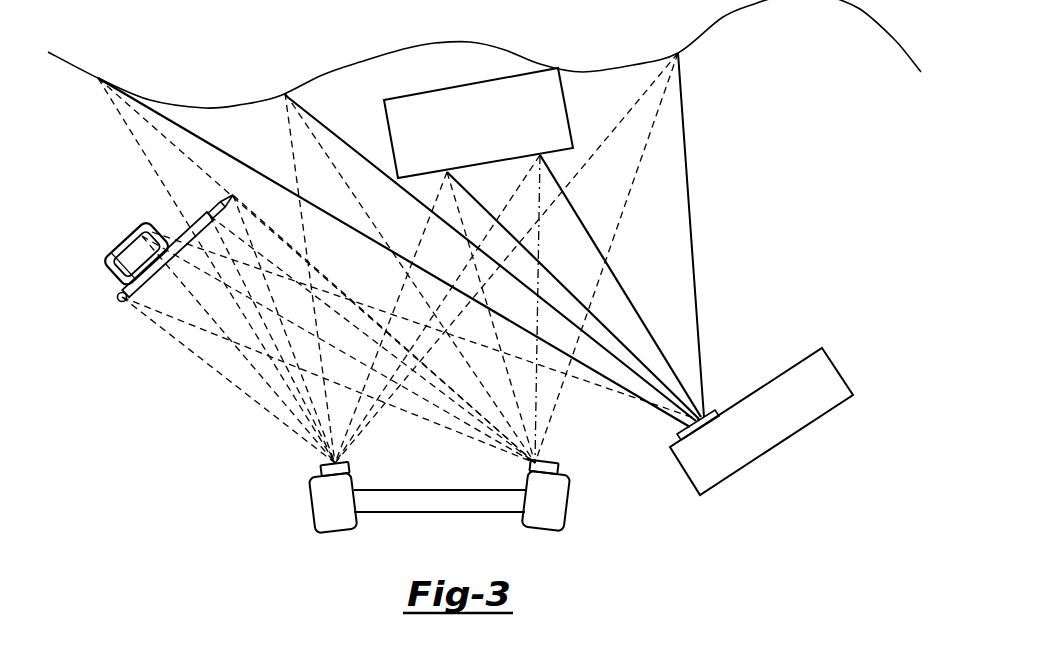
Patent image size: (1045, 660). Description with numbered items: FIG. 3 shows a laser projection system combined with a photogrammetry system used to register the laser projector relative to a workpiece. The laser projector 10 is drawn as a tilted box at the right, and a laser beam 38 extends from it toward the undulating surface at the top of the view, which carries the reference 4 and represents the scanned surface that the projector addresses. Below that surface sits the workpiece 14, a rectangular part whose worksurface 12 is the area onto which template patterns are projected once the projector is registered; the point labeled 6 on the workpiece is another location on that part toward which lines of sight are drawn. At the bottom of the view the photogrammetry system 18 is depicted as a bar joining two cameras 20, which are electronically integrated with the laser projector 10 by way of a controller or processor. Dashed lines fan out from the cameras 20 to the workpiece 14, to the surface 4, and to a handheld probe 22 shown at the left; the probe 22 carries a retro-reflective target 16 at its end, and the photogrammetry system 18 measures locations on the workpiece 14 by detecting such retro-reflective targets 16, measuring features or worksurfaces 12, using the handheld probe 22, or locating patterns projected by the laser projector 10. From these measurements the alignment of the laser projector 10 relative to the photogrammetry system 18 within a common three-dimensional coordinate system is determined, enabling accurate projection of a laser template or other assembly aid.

The surface 4 is at (690, 55).
The laser beam 38 is at (697, 228).
The workpiece 14 is at (484, 137).
The worksurface 12 is at (477, 168).
The fiducial point 6 is at (545, 157).
The laser projector 10 is at (769, 429).
The handheld probe 22 is at (120, 246).
The retro-reflective targets 16 is at (118, 300).
The cameras 20 is at (340, 510).
The photogrammetry system 18 is at (498, 503).